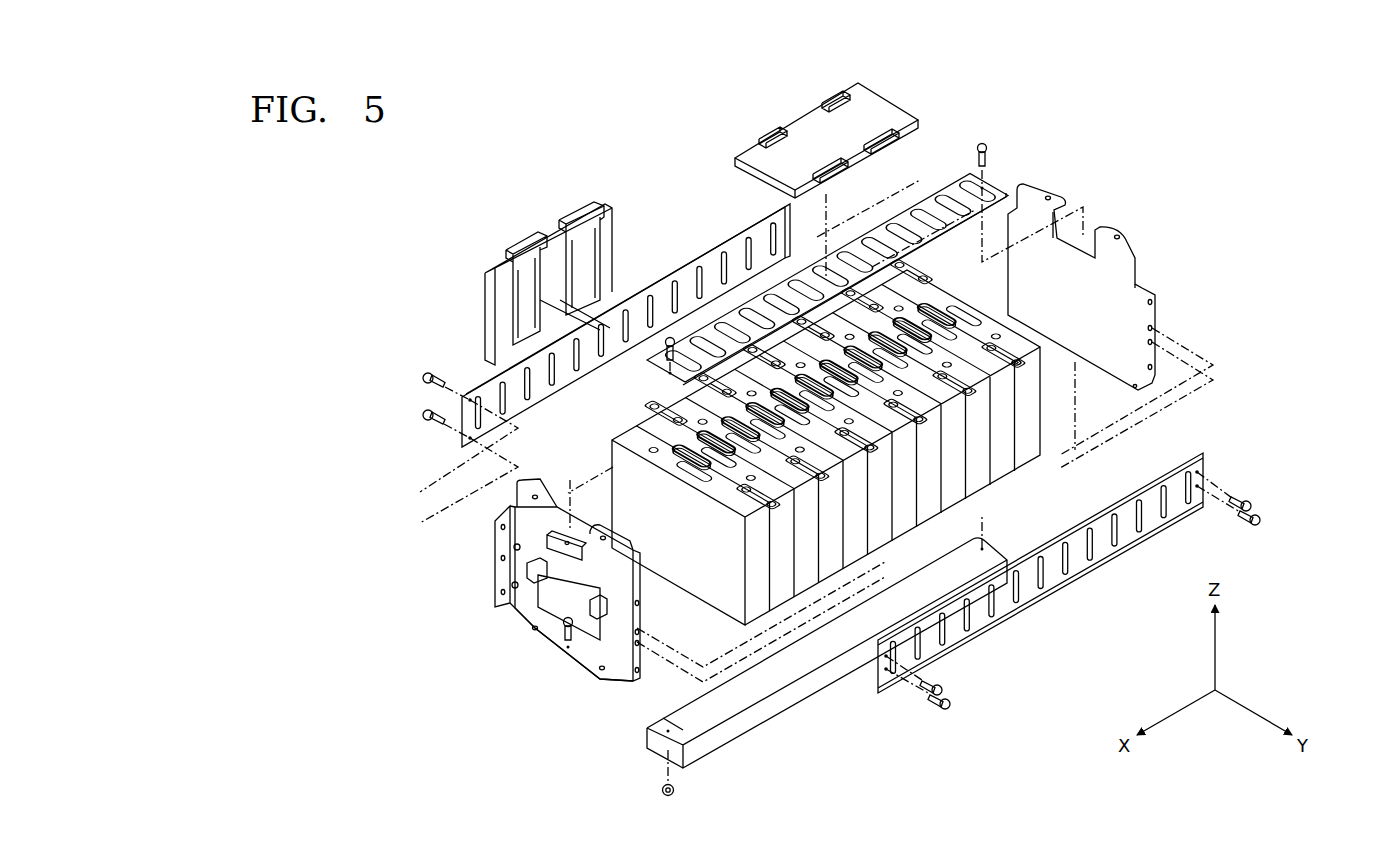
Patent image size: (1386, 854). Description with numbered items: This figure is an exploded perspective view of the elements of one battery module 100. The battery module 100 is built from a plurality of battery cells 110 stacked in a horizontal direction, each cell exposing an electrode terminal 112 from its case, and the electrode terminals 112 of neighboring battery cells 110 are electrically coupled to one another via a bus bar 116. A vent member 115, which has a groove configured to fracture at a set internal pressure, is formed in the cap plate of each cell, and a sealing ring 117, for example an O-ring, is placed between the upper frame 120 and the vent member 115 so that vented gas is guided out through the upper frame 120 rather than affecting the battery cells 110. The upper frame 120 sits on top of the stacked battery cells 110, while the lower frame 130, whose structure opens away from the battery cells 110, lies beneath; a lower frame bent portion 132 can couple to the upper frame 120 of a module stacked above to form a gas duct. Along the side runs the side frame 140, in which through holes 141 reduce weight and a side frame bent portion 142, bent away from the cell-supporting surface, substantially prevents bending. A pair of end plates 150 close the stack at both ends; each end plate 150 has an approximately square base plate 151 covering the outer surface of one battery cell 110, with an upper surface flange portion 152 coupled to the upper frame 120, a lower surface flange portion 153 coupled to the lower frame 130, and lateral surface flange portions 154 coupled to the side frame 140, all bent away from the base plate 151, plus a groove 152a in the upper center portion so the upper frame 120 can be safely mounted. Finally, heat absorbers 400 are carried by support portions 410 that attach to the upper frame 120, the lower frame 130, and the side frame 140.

The battery module 100 is at (1290, 132).
The battery cell 110 is at (1003, 470).
The electrode terminal 112 is at (660, 415).
The vent member 115 is at (692, 480).
The bus bar 116 is at (1006, 354).
The sealing ring 117 is at (674, 458).
The upper frame 120 is at (1001, 184).
The lower frame 130 is at (749, 731).
The lower frame bent portion 132 is at (703, 748).
The side frame 140 is at (670, 266).
The through hole 141 is at (722, 262).
The side frame bent portion 142 is at (696, 258).
The end plate 150 is at (1096, 228).
The base plate 151 is at (550, 623).
The upper surface flange portion 152 is at (538, 492).
The groove 152a is at (577, 527).
The lower surface flange portion 153 is at (575, 659).
The lateral surface flange portion 154 is at (500, 584).
The heat absorber 400 is at (806, 126).
The support portion 410 is at (778, 127).